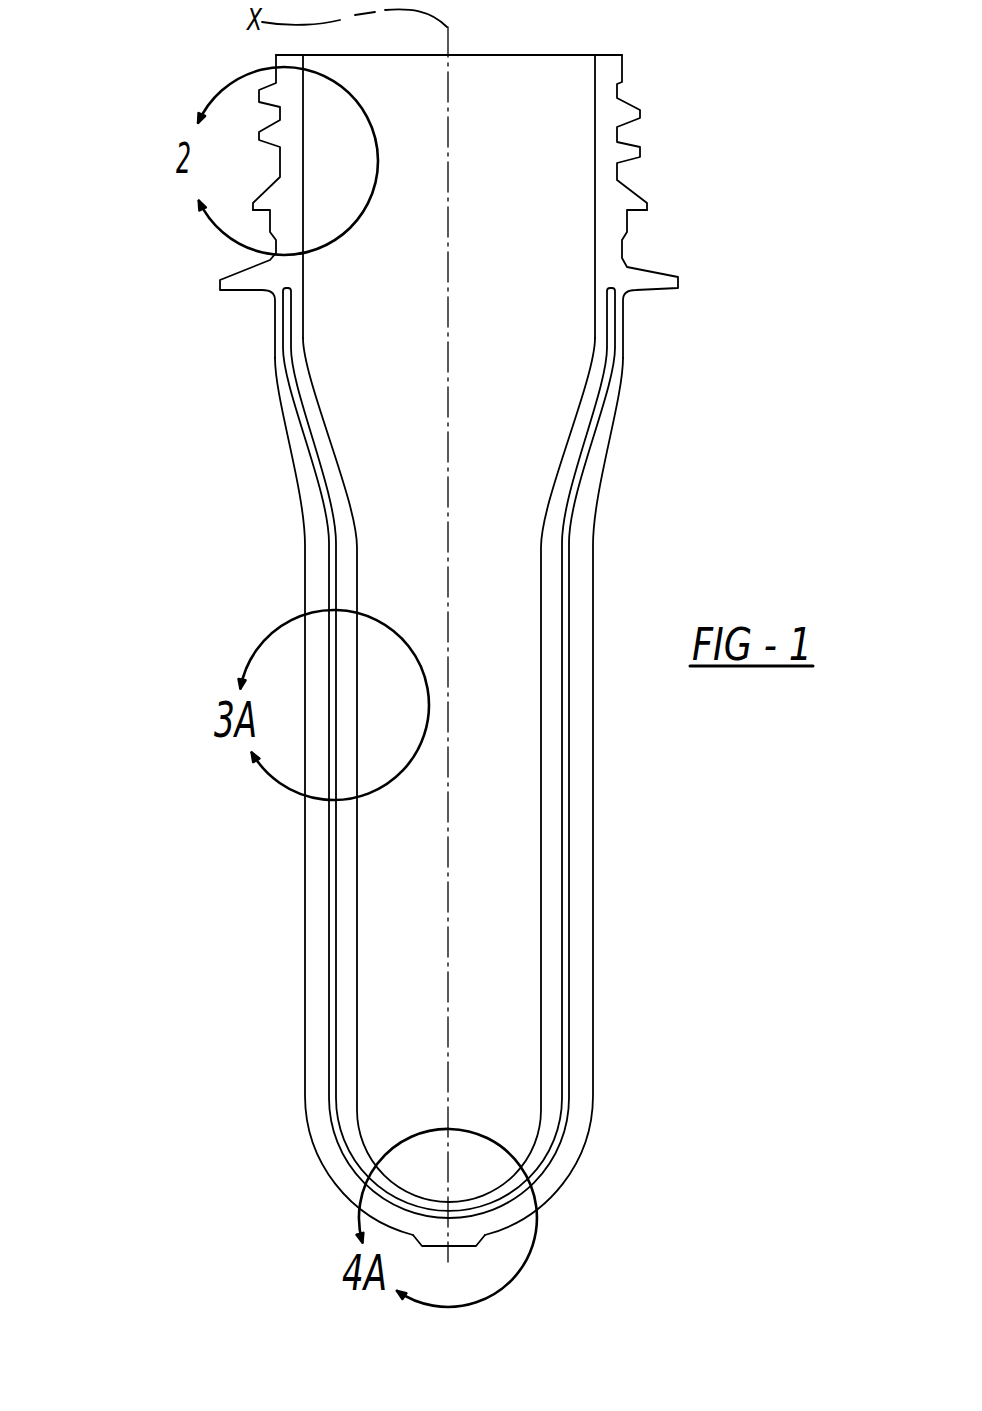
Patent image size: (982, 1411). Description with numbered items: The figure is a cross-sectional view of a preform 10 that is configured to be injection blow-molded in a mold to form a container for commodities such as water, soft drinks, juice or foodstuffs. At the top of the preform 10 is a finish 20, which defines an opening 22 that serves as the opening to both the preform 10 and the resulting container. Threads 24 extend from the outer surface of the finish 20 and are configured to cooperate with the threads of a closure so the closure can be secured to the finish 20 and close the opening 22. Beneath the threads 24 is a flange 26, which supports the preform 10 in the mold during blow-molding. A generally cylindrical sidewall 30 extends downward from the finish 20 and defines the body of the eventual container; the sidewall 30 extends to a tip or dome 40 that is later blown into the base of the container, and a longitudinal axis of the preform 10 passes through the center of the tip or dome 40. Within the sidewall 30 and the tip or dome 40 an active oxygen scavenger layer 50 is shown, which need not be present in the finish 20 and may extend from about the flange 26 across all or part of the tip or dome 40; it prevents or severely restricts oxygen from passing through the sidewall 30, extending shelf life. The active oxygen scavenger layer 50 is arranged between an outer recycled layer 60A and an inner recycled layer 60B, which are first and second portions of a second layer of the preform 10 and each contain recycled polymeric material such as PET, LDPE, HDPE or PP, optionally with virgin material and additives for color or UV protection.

The preform 10 is at (107, 142).
The finish 20 is at (623, 67).
The opening 22 is at (597, 55).
The threads 24 is at (640, 114).
The flange 26 is at (678, 283).
The sidewall 30 is at (595, 637).
The tip or dome 40 is at (490, 1236).
The active oxygen scavenger layer 50 is at (333, 848).
The outer recycled layer 60A is at (317, 920).
The inner recycled layer 60B is at (347, 982).